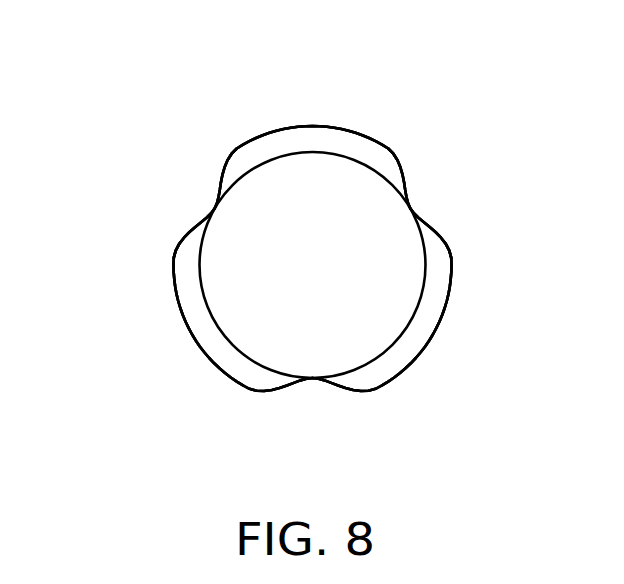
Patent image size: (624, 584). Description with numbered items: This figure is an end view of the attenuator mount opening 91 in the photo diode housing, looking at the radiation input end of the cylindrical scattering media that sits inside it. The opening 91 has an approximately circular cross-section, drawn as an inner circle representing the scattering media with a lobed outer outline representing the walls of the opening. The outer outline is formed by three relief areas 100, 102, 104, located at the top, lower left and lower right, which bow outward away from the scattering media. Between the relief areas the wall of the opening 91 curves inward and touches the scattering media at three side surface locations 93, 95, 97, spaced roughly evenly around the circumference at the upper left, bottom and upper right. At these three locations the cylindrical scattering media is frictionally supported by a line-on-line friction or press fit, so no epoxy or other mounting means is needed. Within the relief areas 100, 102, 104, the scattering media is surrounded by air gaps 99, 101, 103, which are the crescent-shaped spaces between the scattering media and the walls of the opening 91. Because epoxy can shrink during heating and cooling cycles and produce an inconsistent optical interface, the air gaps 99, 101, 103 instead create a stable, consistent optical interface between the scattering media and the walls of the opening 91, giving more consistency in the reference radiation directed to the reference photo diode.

The attenuator mount opening 91 is at (378, 147).
The side surface location 93 is at (217, 210).
The side surface location 95 is at (310, 380).
The side surface location 97 is at (410, 208).
The air gap 99 is at (335, 145).
The relief area 100 is at (277, 133).
The air gap 101 is at (185, 285).
The relief area 102 is at (210, 363).
The air gap 103 is at (393, 368).
The relief area 104 is at (433, 333).